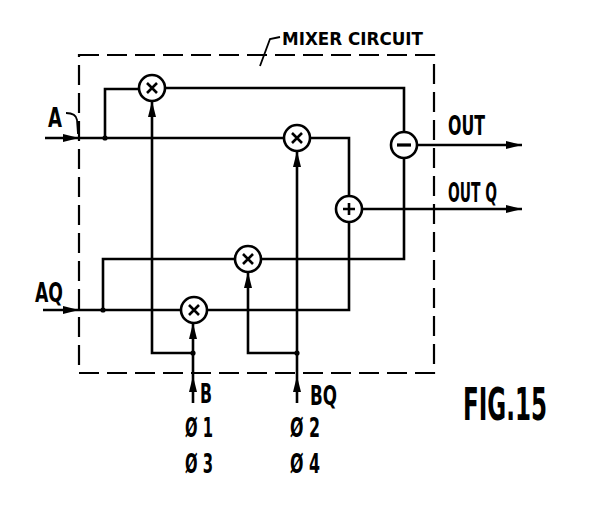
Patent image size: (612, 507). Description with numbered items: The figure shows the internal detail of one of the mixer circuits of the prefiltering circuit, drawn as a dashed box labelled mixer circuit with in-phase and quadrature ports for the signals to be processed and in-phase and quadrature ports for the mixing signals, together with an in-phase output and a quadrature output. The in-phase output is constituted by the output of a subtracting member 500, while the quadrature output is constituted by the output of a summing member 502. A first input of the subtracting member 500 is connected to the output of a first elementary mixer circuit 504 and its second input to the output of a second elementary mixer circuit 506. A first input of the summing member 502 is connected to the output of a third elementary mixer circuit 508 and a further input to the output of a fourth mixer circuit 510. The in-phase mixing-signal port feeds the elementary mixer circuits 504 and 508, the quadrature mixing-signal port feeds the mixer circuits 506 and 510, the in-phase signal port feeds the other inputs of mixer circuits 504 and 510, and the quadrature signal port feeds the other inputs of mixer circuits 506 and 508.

The subtracting member 500 is at (391, 144).
The summing member 502 is at (379, 191).
The elementary mixer circuit 504 is at (162, 79).
The second elementary mixer circuit 506 is at (256, 247).
The third elementary mixer circuit 508 is at (203, 298).
The fourth mixer circuit 510 is at (292, 126).